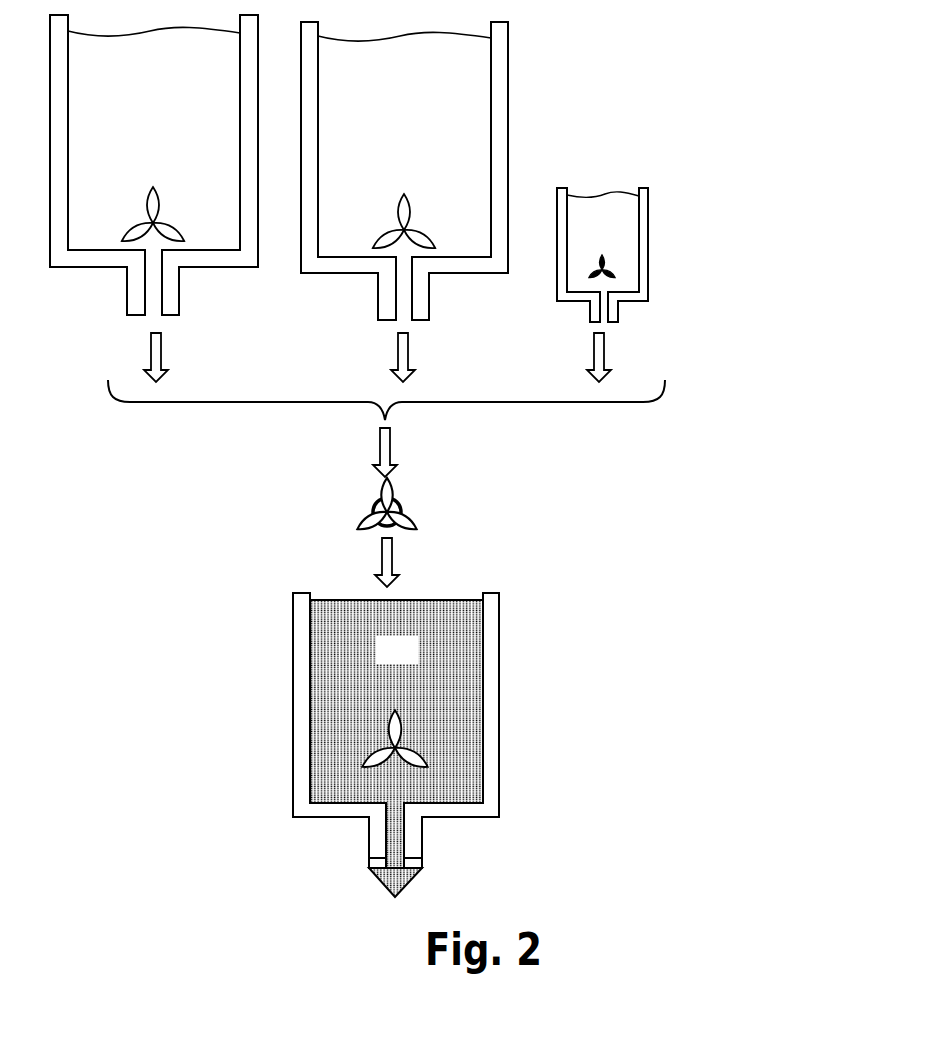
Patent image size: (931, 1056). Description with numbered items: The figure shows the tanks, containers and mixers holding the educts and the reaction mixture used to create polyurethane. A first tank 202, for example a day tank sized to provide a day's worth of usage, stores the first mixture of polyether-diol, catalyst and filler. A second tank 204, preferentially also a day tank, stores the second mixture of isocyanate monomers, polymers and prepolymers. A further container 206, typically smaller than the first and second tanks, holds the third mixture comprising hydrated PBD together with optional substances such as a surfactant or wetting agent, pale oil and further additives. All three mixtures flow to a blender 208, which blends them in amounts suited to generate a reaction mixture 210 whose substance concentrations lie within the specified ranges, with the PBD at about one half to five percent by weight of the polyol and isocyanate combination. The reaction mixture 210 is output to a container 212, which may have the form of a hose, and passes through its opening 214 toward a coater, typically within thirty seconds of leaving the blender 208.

The first tank 202 is at (137, 80).
The second tank 204 is at (425, 87).
The further container 206 is at (620, 238).
The blender 208 is at (404, 512).
The reaction mixture 210 is at (380, 660).
The container 212 is at (499, 645).
The opening 214 is at (422, 858).